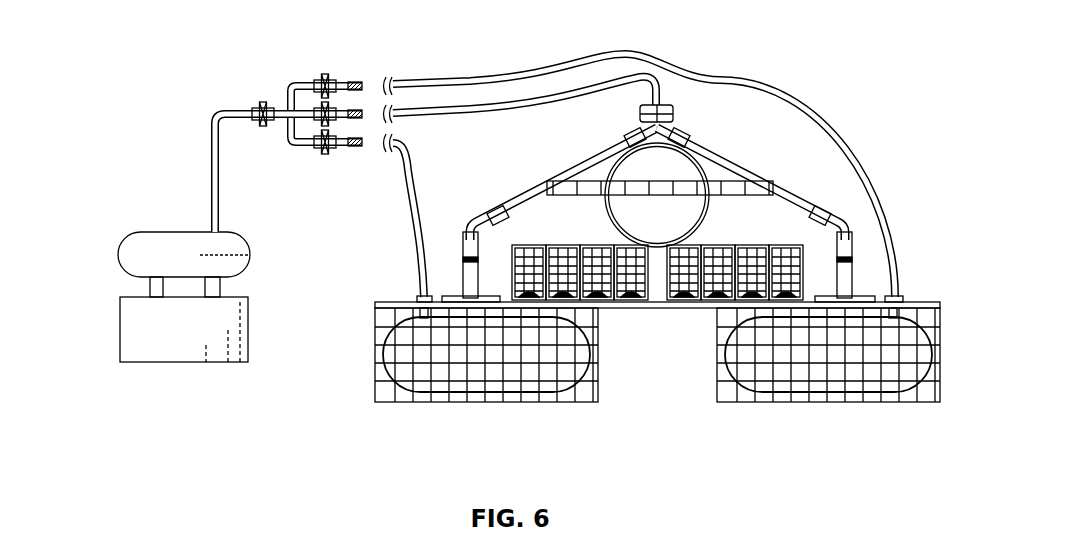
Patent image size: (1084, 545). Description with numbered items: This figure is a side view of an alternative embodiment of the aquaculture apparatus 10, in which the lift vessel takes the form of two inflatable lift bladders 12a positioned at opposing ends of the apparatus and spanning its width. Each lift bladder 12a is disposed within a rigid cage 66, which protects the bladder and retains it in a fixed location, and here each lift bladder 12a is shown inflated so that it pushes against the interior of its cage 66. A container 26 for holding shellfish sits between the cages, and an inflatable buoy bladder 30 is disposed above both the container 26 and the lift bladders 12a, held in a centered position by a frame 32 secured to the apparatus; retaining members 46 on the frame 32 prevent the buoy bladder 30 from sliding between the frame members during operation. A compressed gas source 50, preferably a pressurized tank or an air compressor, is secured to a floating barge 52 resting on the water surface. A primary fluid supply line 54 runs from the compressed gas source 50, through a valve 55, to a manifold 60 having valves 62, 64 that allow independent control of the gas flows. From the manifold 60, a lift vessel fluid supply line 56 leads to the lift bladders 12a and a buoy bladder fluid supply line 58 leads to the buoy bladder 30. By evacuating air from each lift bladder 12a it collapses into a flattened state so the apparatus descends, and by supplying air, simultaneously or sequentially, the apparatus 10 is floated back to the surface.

The aquaculture apparatus 10 is at (167, 42).
The inflatable lift bladder 12a is at (512, 376).
The container 26 is at (538, 245).
The inflatable buoy bladder 30 is at (680, 168).
The frame 32 is at (848, 210).
The retaining members 46 is at (597, 186).
The compressed gas source 50 is at (138, 250).
The floating barge 52 is at (128, 305).
The primary fluid supply line 54 is at (210, 160).
The inlet valve 55 is at (262, 102).
The lift vessel fluid supply line 56 is at (413, 118).
The buoy bladder fluid supply line 58 is at (528, 75).
The manifold 60 is at (291, 80).
The valve 62 is at (334, 152).
The valve 64 is at (327, 74).
The rigid cage 66 is at (437, 402).